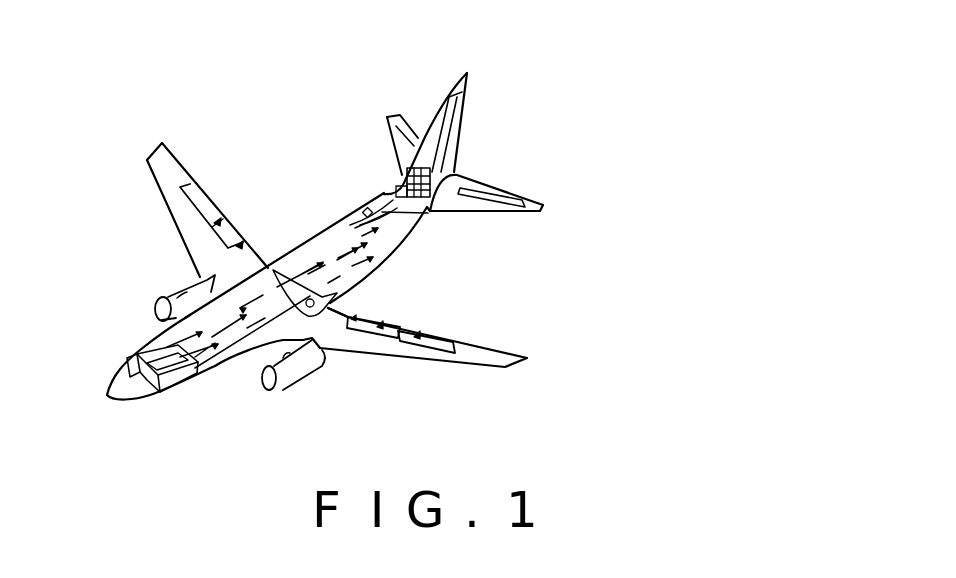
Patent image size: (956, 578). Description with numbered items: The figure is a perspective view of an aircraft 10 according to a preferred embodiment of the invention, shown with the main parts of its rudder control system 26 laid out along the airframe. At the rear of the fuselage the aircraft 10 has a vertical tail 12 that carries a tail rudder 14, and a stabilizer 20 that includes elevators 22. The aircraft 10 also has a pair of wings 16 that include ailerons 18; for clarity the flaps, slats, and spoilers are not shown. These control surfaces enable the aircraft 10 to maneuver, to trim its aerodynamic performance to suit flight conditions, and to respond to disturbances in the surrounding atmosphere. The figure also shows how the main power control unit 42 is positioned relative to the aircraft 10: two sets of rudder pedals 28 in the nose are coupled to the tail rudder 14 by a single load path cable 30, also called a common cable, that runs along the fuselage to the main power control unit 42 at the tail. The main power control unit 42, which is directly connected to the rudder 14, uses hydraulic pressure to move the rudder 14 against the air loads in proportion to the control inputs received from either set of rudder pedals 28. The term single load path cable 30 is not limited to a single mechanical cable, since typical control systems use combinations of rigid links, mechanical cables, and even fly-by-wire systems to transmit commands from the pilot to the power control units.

The aircraft 10 is at (280, 152).
The vertical tail 12 is at (432, 103).
The tail rudder 14 is at (467, 115).
The wings 16 is at (168, 240).
The ailerons 18 is at (240, 208).
The stabilizer 20 is at (383, 157).
The elevators 22 is at (406, 128).
The rudder control system 26 is at (363, 198).
The rudder pedals 28 is at (138, 390).
The single load path cable 30 is at (213, 357).
The main power control unit 42 is at (420, 213).